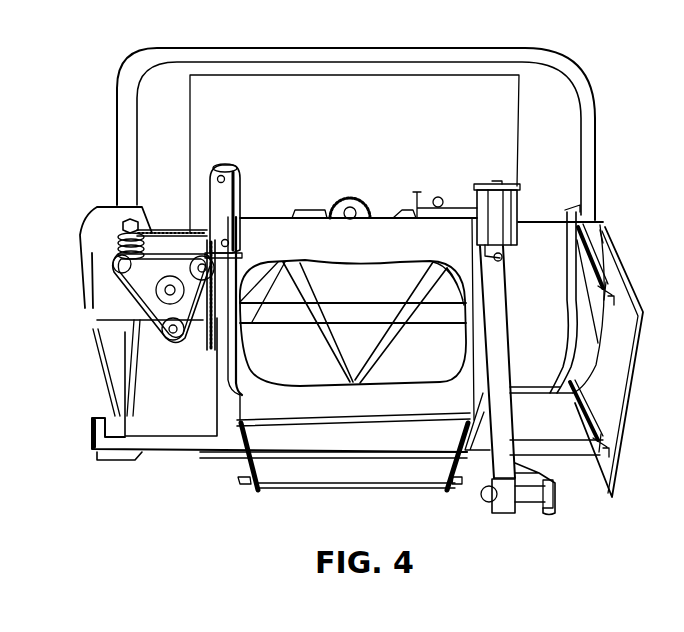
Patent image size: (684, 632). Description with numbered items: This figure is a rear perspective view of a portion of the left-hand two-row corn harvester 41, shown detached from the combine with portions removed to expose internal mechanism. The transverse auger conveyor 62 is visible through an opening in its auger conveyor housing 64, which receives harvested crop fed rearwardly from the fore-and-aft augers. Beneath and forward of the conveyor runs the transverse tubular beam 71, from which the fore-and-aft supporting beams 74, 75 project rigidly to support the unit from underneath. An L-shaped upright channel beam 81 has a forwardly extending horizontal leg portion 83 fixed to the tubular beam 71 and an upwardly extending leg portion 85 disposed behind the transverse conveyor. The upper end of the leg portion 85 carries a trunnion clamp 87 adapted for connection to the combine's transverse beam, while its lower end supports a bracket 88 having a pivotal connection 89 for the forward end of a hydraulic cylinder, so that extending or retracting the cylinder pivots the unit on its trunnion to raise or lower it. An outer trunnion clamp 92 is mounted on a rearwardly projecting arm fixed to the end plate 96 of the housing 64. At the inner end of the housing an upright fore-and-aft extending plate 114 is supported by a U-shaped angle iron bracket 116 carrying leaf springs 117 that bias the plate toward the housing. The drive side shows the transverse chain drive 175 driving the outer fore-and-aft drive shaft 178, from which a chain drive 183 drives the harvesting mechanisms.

The left-hand two-row corn harvester 41 is at (577, 70).
The transverse auger conveyor 62 is at (350, 357).
The auger conveyor housing 64 is at (551, 251).
The transverse tubular beam 71 is at (110, 442).
The fore-and-aft supporting beam 74 is at (266, 478).
The fore-and-aft supporting beam 75 is at (125, 455).
The L-shaped upright channel beam 81 is at (497, 335).
The horizontal leg portion 83 is at (473, 465).
The upwardly extending leg portion 85 is at (498, 365).
The trunnion clamp 87 is at (481, 188).
The bracket 88 is at (546, 508).
The pivotal connection 89 is at (532, 495).
The outer trunnion clamp 92 is at (230, 188).
The end plate 96 is at (228, 371).
The upright fore-and-aft extending plate 114 is at (623, 303).
The U-shaped angle iron bracket 116 is at (567, 275).
The leaf spring 117 is at (590, 262).
The transverse chain drive 175 is at (174, 228).
The outer fore-and-aft drive shaft 178 is at (122, 228).
The chain drive 183 is at (108, 303).